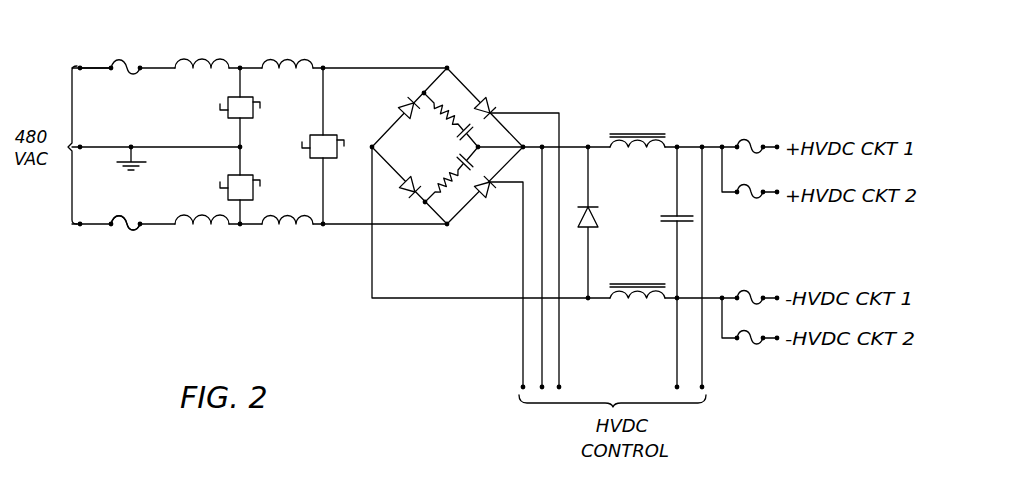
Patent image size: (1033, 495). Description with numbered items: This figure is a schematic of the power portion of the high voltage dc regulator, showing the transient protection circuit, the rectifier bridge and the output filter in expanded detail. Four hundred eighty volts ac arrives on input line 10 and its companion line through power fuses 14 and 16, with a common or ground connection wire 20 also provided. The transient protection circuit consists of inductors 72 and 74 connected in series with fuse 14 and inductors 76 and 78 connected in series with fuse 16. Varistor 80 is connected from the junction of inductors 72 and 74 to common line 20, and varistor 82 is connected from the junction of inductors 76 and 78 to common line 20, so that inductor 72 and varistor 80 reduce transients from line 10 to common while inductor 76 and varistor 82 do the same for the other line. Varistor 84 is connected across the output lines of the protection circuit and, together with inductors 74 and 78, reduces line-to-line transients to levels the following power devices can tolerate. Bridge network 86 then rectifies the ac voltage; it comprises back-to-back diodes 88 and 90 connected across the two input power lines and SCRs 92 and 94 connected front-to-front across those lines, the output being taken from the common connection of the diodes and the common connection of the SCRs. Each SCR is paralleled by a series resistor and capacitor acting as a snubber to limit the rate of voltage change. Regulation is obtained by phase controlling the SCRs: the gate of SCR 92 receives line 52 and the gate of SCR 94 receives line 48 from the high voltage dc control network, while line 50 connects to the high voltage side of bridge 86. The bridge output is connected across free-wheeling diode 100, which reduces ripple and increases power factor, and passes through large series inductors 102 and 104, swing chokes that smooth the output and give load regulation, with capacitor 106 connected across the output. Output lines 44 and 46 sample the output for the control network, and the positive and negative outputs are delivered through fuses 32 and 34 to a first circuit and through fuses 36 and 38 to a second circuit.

The input line 10 is at (98, 66).
The fuse 14 is at (128, 66).
The fuse 16 is at (127, 230).
The common or ground connection wire 20 is at (117, 145).
The inductor 72 is at (199, 64).
The inductor 74 is at (287, 74).
The inductor 76 is at (198, 230).
The inductor 78 is at (287, 230).
The varistor 80 is at (228, 112).
The varistor 82 is at (228, 180).
The varistor 84 is at (310, 150).
The bridge network 86 is at (477, 63).
The diode 88 is at (398, 103).
The diode 90 is at (408, 195).
The SCR 92 is at (492, 103).
The SCR 94 is at (496, 198).
The free-wheeling diode 100 is at (593, 232).
The inductor 102 is at (638, 158).
The inductor 104 is at (642, 306).
The capacitor 106 is at (672, 222).
The fuse 32 is at (747, 146).
The fuse 34 is at (750, 190).
The fuse 36 is at (747, 298).
The fuse 38 is at (750, 338).
The output line 44 is at (677, 349).
The output line 46 is at (702, 366).
The line 48 is at (523, 316).
The line 50 is at (542, 336).
The line 52 is at (559, 334).